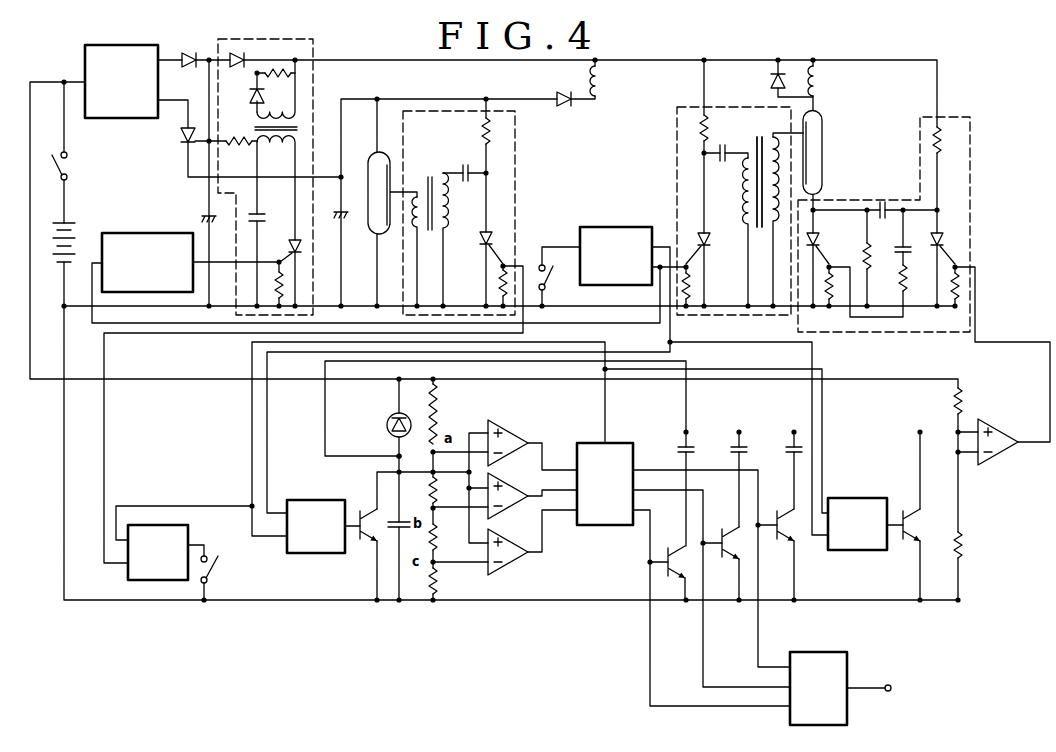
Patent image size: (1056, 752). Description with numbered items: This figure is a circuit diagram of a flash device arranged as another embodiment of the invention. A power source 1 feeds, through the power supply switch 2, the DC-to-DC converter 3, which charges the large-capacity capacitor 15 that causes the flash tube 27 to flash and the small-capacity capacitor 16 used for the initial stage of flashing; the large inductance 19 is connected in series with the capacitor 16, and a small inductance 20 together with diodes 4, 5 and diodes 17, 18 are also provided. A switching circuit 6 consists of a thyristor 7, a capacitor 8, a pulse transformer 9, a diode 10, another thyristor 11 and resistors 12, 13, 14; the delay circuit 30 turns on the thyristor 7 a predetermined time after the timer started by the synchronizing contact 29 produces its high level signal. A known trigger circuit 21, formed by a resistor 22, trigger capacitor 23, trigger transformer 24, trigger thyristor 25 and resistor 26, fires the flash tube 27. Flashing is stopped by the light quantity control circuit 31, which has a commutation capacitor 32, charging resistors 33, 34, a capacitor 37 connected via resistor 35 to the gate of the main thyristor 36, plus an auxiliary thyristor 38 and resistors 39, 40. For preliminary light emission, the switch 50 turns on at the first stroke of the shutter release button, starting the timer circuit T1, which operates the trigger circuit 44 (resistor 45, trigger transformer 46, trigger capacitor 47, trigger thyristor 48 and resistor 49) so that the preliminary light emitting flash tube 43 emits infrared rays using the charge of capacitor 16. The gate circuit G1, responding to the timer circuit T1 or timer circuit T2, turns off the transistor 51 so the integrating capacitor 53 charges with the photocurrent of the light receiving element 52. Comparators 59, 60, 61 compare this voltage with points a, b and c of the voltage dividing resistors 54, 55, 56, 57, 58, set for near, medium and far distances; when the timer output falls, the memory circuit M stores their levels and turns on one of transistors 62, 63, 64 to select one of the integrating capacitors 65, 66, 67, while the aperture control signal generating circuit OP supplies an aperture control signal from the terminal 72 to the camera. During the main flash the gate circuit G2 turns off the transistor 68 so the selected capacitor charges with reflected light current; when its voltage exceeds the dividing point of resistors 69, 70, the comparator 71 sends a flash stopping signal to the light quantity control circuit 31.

The battery 1 is at (74, 234).
The power supply switch 2 is at (66, 180).
The DC-to-DC converter 3 is at (99, 118).
The diode 4 is at (190, 68).
The diode 5 is at (179, 138).
The switching circuit 6 is at (315, 77).
The thyristor 7 is at (298, 234).
The capacitor 8 is at (265, 217).
The pulse transformer 9 is at (295, 131).
The diode 10 is at (253, 106).
The thyristor 11 is at (239, 68).
The resistor 12 is at (277, 77).
The resistor 13 is at (235, 146).
The resistor 14 is at (294, 287).
The capacitor 15 is at (214, 221).
The capacitor 16 is at (333, 218).
The diode 17 is at (560, 94).
The diode 18 is at (768, 83).
The inductance 19 is at (603, 83).
The inductance 20 is at (822, 80).
The trigger circuit 21 is at (676, 124).
The resistor 22 is at (711, 131).
The trigger capacitor 23 is at (726, 160).
The trigger transformer 24 is at (760, 225).
The trigger thyristor 25 is at (708, 244).
The resistor 26 is at (690, 286).
The flash tube 27 is at (822, 120).
The synchronizing contact 29 is at (539, 265).
The delay circuit 30 is at (175, 233).
The light quantity control circuit 31 is at (962, 115).
The commutation capacitor 32 is at (888, 206).
The charging resistor 33 is at (941, 145).
The charging resistor 34 is at (871, 268).
The resistor 35 is at (906, 279).
The main thyristor 36 is at (818, 239).
The capacitor 37 is at (906, 246).
The auxiliary thyristor 38 is at (939, 235).
The resistor 39 is at (832, 295).
The resistor 40 is at (956, 306).
The preliminary light emitting flash tube 43 is at (365, 155).
The trigger circuit 44 is at (520, 117).
The resistor 45 is at (493, 138).
The trigger transformer 46 is at (430, 173).
The trigger capacitor 47 is at (465, 165).
The trigger thyristor 48 is at (492, 229).
The resistor 49 is at (493, 285).
The switch 50 is at (218, 558).
The transistor 51 is at (360, 513).
The light receiving element 52 is at (389, 421).
The integrating capacitor 53 is at (407, 520).
The voltage dividing resistor 54 is at (438, 403).
The voltage dividing resistor 55 is at (410, 455).
The voltage dividing resistor 56 is at (437, 490).
The voltage dividing resistor 57 is at (439, 533).
The voltage dividing resistor 58 is at (438, 582).
The comparator 59 is at (513, 432).
The comparator 60 is at (515, 490).
The comparator 61 is at (516, 545).
The transistor 62 is at (665, 553).
The transistor 63 is at (720, 529).
The transistor 64 is at (777, 509).
The integrating capacitor 65 is at (673, 450).
The integrating capacitor 66 is at (725, 450).
The integrating capacitor 67 is at (784, 450).
The transistor 68 is at (912, 520).
The voltage dividing resistor 69 is at (963, 390).
The voltage dividing resistor 70 is at (962, 541).
The comparator 71 is at (1000, 456).
The terminal 72 is at (890, 685).
The timer circuit T1 is at (192, 527).
The timer circuit T2 is at (630, 227).
The gate circuit G1 is at (329, 500).
The gate circuit G2 is at (870, 498).
The memory circuit M is at (584, 525).
The aperture control signal generating circuit OP is at (834, 652).